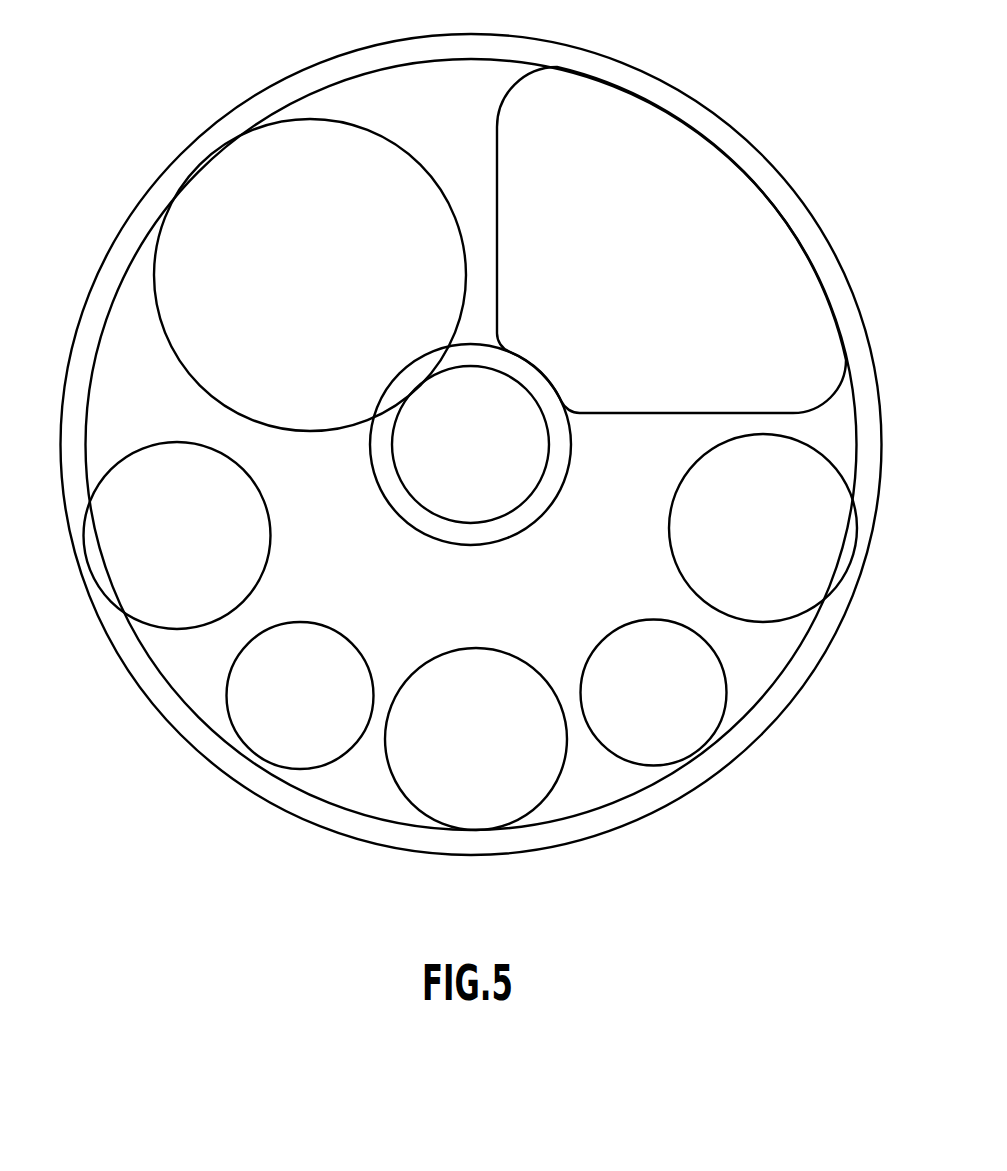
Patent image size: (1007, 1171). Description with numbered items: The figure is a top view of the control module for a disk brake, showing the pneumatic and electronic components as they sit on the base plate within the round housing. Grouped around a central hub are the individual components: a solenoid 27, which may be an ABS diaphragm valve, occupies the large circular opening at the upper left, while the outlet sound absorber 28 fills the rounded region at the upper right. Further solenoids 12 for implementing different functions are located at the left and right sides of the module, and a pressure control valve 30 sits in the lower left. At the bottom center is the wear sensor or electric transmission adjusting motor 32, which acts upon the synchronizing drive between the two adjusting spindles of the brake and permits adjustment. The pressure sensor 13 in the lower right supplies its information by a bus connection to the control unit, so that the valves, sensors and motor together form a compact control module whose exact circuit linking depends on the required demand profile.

The solenoid 27 is at (153, 270).
The outlet sound absorber 28 is at (807, 310).
The solenoids 12 is at (155, 628).
The pressure control valve 30 is at (272, 752).
The electric transmission adjusting motor 32 is at (547, 788).
The pressure sensor 13 is at (682, 747).